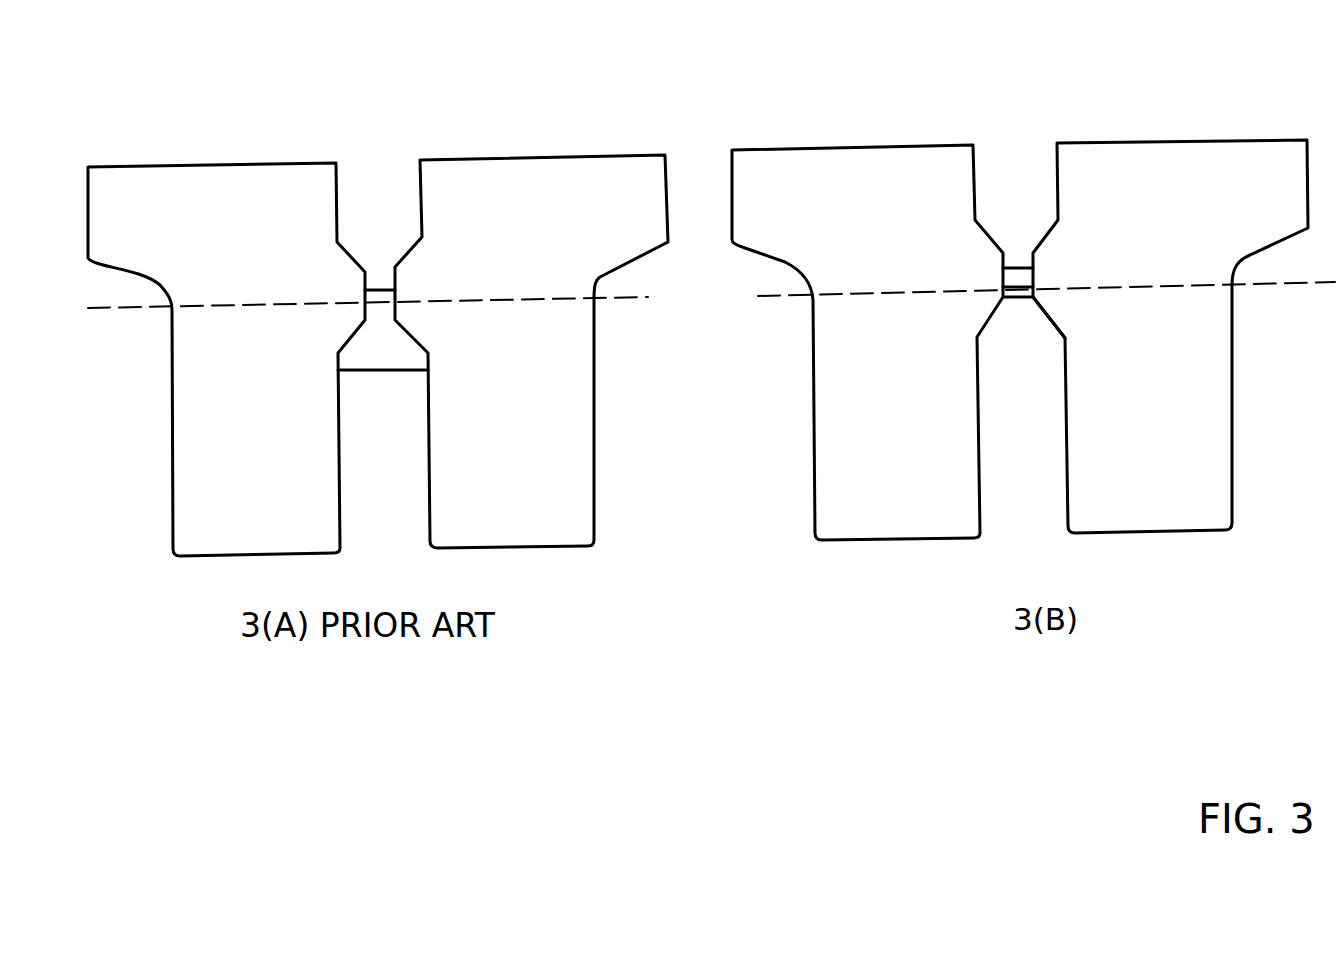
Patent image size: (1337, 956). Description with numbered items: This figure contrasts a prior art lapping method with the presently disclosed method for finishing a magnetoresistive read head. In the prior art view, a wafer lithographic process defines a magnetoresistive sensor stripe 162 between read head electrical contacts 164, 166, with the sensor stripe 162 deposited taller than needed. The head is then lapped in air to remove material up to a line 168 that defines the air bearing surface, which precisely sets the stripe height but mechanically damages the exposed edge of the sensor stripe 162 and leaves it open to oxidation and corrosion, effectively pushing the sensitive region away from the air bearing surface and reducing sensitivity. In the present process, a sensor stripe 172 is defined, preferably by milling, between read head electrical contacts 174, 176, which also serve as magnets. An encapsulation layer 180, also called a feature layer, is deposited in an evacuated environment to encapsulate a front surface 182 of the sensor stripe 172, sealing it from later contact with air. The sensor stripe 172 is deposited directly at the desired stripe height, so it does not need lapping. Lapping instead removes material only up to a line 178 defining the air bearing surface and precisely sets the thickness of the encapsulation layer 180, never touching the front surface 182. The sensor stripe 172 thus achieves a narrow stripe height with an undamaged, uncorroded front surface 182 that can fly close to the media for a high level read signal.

The magnetoresistive sensor stripe 162 is at (380, 290).
The read head electrical contact 164 is at (230, 163).
The read head electrical contact 166 is at (508, 155).
The line 168 is at (152, 310).
The magnetoresistive sensor stripe 172 is at (1013, 268).
The read head electrical contact 174 is at (760, 150).
The read head electrical contact 176 is at (1113, 143).
The line 178 is at (780, 297).
The encapsulation layer 180 is at (1013, 297).
The front surface 182 is at (1067, 337).